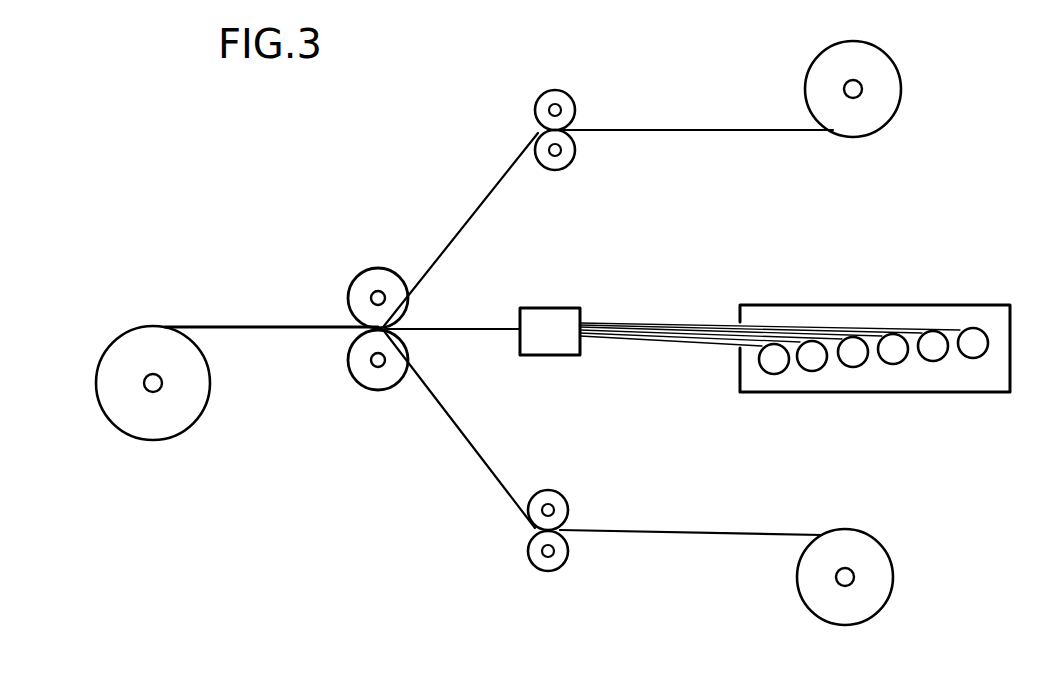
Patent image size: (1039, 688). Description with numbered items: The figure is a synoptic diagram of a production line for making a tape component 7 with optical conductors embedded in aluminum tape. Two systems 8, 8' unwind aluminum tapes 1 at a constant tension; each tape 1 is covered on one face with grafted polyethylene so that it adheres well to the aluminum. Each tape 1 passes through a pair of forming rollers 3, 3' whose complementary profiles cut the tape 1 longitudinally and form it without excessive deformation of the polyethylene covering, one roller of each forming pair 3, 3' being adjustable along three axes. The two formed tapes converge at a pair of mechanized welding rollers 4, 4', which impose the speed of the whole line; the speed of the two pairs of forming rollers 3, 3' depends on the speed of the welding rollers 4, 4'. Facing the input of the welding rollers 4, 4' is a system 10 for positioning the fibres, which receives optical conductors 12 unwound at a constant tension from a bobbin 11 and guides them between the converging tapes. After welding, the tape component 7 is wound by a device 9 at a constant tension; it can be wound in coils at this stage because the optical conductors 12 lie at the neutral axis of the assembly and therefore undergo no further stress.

The aluminum tape 1 is at (706, 130).
The forming roller 3 is at (525, 315).
The forming roller 3' is at (570, 330).
The welding roller 4 is at (372, 278).
The welding roller 4' is at (360, 372).
The tape component 7 is at (237, 327).
The unwinding system 8 is at (872, 87).
The unwinding system 8' is at (871, 577).
The winding device 9 is at (137, 345).
The fibre positioning system 10 is at (565, 315).
The bobbin 11 is at (817, 312).
The optical conductors 12 is at (471, 328).